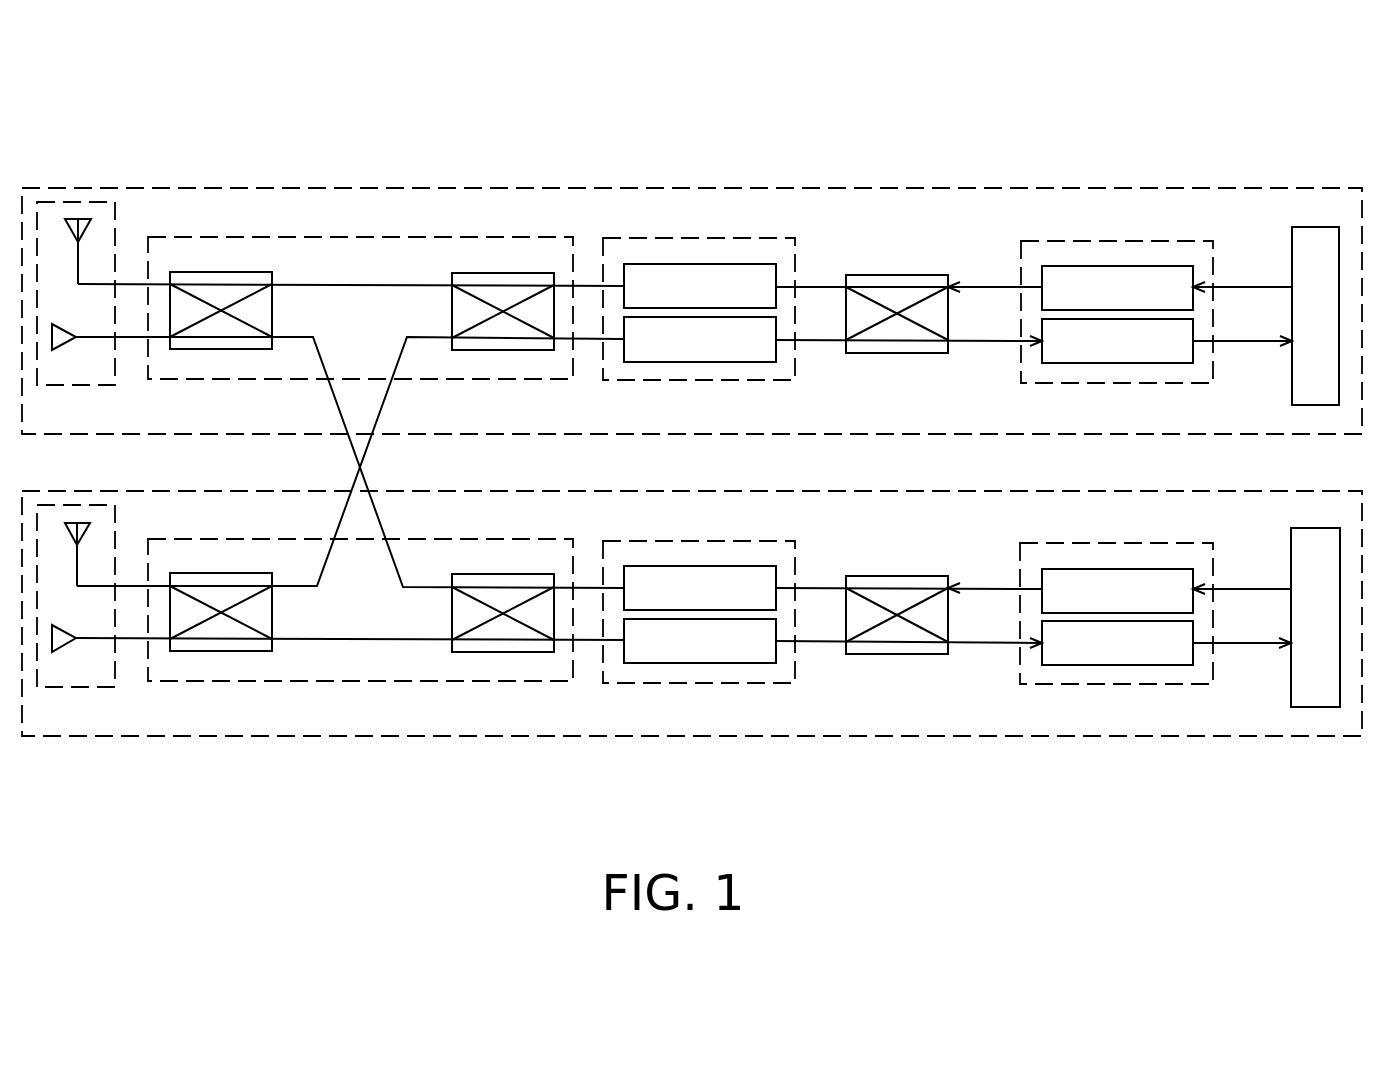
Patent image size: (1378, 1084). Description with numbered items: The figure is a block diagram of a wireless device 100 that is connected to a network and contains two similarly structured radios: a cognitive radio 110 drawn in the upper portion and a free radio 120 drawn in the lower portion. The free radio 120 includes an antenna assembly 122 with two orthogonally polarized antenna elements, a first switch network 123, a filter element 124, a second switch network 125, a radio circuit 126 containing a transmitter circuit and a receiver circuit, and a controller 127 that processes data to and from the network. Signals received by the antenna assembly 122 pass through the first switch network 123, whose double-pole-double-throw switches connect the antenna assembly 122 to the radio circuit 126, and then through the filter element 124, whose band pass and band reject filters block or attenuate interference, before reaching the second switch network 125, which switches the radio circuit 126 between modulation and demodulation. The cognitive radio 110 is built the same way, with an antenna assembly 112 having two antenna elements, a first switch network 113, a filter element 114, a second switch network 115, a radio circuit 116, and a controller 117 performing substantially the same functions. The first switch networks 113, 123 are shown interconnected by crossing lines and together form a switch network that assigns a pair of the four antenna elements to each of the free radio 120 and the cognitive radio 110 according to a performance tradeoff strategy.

The wireless device 100 is at (509, 858).
The cognitive radio 110 is at (212, 187).
The antenna assembly 112 is at (75, 200).
The first switch network 113 is at (360, 237).
The filter element 114 is at (712, 238).
The second switch network 115 is at (883, 275).
The radio circuit 116 is at (1128, 241).
The controller 117 is at (1315, 227).
The free radio 120 is at (212, 737).
The antenna assembly 122 is at (72, 690).
The first switch network 123 is at (360, 683).
The filter element 124 is at (712, 686).
The second switch network 125 is at (882, 655).
The radio circuit 126 is at (1127, 687).
The controller 127 is at (1313, 708).